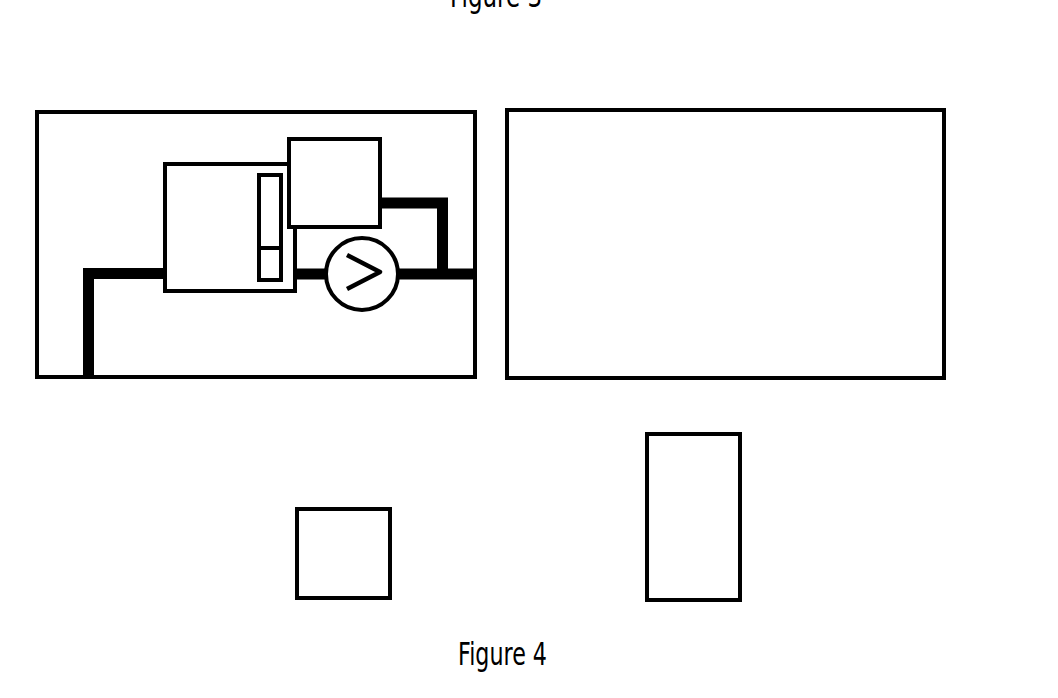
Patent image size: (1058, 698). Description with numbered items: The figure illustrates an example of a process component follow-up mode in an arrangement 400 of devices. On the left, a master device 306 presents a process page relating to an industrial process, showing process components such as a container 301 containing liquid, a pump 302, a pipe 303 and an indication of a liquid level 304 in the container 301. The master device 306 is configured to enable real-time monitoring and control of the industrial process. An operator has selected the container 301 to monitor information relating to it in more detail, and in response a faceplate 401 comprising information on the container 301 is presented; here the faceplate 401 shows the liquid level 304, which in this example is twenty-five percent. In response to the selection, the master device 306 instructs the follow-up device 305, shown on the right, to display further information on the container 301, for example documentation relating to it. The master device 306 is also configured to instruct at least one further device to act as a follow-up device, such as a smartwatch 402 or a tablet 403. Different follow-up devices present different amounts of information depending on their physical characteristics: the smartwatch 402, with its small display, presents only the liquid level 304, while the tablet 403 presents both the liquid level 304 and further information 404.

The display screen arrangement 400 is at (738, 68).
The master device 306 is at (134, 110).
The follow-up device 305 is at (627, 108).
The container 301 is at (163, 195).
The pump 302 is at (340, 308).
The pipe 303 is at (96, 357).
The liquid level 304 is at (257, 250).
The faceplate 401 is at (386, 152).
The smartwatch 402 is at (393, 507).
The tablet 403 is at (743, 505).
The further information 404 is at (727, 555).